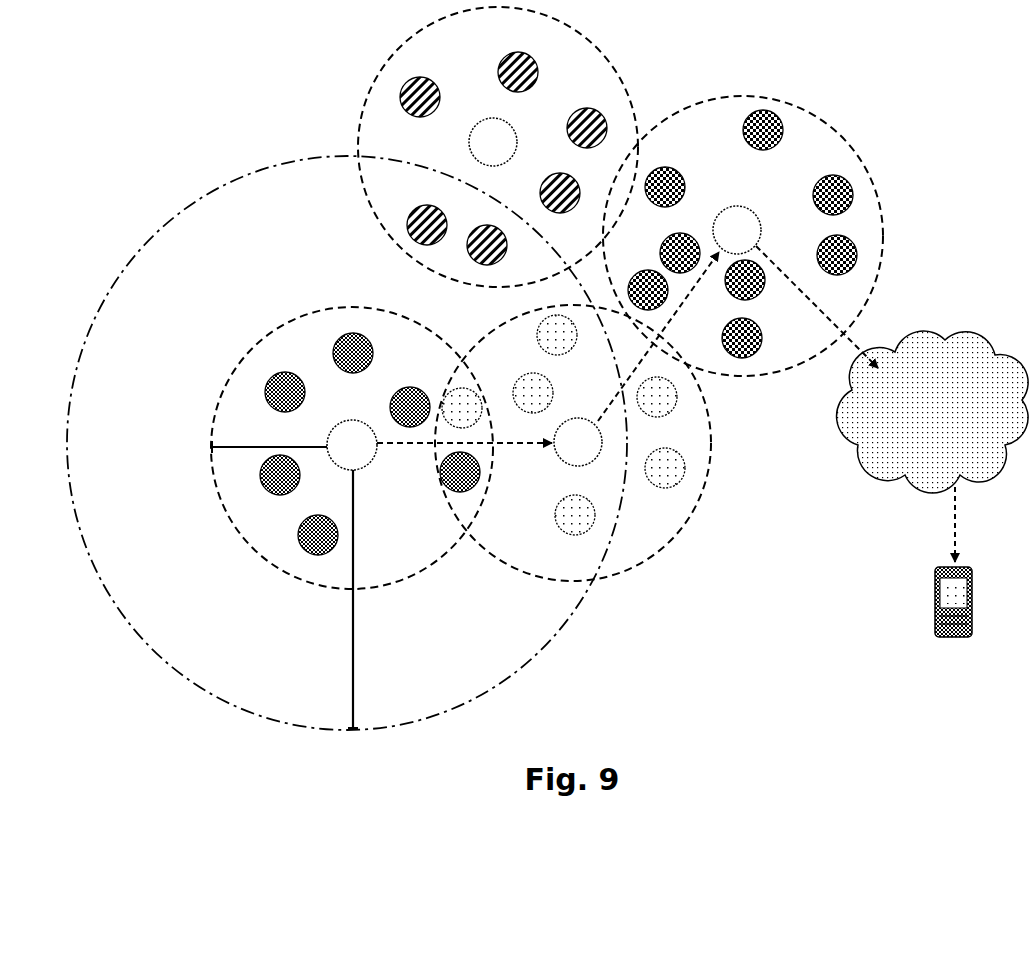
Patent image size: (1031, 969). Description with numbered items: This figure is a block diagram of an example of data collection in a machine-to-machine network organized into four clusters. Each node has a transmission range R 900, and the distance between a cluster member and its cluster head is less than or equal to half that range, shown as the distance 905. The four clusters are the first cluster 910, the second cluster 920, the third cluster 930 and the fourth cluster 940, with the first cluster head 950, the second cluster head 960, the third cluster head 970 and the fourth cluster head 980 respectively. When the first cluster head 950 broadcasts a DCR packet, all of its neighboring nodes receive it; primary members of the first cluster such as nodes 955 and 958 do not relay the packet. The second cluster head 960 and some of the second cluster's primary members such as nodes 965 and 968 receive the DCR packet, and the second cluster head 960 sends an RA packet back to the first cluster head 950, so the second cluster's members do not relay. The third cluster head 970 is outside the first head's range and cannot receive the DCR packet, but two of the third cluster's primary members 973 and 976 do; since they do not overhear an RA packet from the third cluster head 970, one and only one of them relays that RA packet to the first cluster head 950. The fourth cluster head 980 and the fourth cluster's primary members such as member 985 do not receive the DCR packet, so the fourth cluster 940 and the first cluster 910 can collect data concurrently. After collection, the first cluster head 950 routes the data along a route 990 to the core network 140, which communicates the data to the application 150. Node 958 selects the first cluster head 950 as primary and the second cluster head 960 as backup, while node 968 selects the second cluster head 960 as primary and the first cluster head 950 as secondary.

The transmission range R 900 is at (369, 700).
The distance R/2 905 is at (228, 422).
The cluster C1 910 is at (277, 322).
The cluster C2 920 is at (710, 480).
The cluster C3 930 is at (363, 107).
The cluster C4 940 is at (868, 172).
The cluster head CH1 950 is at (362, 468).
The node 955 is at (288, 494).
The node 958 is at (458, 493).
The cluster head CH2 960 is at (588, 466).
The node 965 is at (553, 508).
The node 968 is at (460, 388).
The cluster head CH3 970 is at (483, 118).
The primary member 973 is at (420, 207).
The primary member 976 is at (493, 228).
The cluster head CH4 980 is at (750, 210).
The member 985 is at (680, 170).
The route 990 is at (498, 448).
The core network 140 is at (965, 348).
The application 150 is at (977, 592).